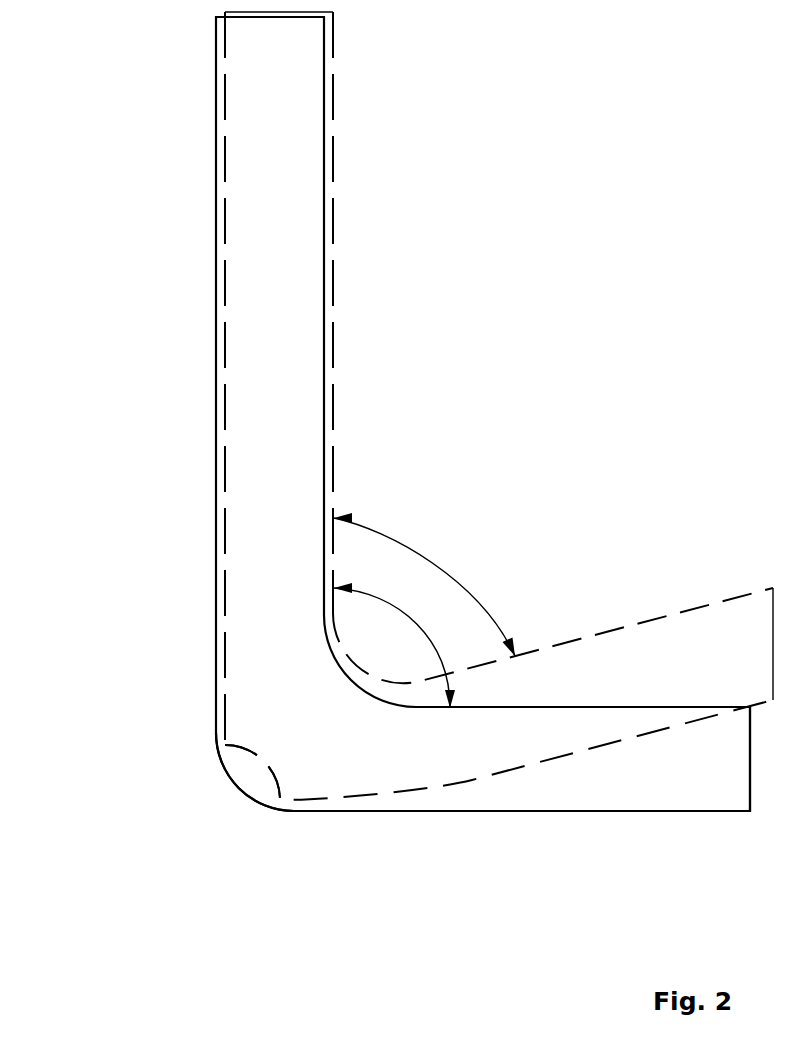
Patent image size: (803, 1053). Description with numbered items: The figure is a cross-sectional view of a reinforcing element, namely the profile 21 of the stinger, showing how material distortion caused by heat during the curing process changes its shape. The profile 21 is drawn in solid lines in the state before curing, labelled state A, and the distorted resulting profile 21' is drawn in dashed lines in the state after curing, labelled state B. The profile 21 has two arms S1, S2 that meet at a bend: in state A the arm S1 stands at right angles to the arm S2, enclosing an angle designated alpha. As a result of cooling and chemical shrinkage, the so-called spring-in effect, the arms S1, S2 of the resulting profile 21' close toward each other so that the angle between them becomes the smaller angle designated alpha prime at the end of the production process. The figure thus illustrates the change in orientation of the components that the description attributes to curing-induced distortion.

The arm S1 is at (158, 95).
The arm S2 is at (718, 568).
The profile 21 is at (241, 847).
The resulting profile 21' is at (407, 638).
The state before curing A is at (456, 834).
The state after curing B is at (582, 600).